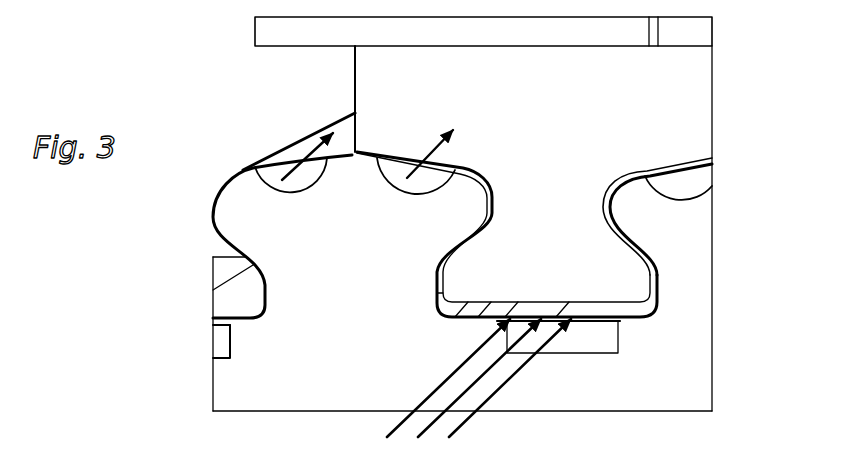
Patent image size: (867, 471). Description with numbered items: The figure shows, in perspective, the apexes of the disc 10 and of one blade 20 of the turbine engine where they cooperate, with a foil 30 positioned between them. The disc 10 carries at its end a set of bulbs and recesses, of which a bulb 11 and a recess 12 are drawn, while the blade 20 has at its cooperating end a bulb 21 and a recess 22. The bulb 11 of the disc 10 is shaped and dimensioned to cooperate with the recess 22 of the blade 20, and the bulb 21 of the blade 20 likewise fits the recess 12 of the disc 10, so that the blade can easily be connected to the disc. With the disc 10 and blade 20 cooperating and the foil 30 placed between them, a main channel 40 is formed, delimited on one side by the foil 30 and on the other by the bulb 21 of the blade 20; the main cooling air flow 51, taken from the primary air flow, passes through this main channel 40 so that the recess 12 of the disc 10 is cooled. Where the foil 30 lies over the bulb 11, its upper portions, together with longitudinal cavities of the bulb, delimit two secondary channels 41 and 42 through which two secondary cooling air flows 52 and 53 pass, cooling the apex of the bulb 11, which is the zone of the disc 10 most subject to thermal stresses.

The disc 10 is at (242, 395).
The bulb 11 is at (258, 222).
The recess 12 is at (645, 317).
The blade 20 is at (678, 98).
The bulb 21 is at (632, 280).
The recess 22 is at (360, 148).
The foil 30 is at (235, 293).
The main channel 40 is at (596, 304).
The secondary channel 41 is at (272, 178).
The secondary channel 42 is at (395, 162).
The main cooling air flow 51 is at (463, 423).
The secondary cooling air flow 52 is at (305, 155).
The secondary cooling air flow 53 is at (418, 157).